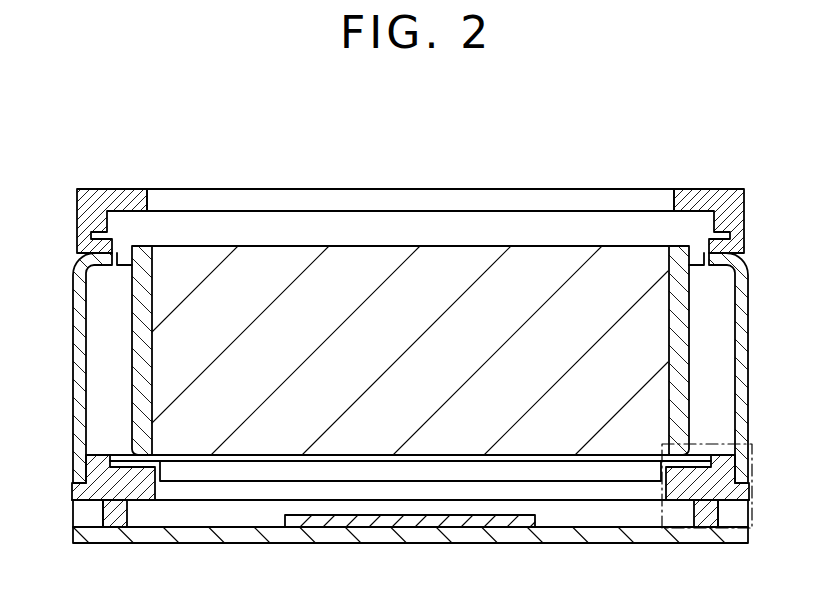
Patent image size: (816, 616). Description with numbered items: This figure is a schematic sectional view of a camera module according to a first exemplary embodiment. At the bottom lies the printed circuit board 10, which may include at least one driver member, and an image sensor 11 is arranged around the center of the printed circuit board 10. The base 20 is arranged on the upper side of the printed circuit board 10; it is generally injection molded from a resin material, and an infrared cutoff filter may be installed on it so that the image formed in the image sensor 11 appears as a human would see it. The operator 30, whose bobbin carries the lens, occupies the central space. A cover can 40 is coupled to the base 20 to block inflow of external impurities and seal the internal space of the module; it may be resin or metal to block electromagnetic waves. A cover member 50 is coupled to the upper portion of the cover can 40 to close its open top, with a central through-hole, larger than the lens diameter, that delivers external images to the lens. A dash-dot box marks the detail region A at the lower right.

The printed circuit board 10 is at (605, 544).
The image sensor 11 is at (504, 524).
The base 20 is at (75, 490).
The operator 30 is at (134, 358).
The cover can 40 is at (73, 355).
The cover member 50 is at (114, 190).
The detail region A is at (753, 443).